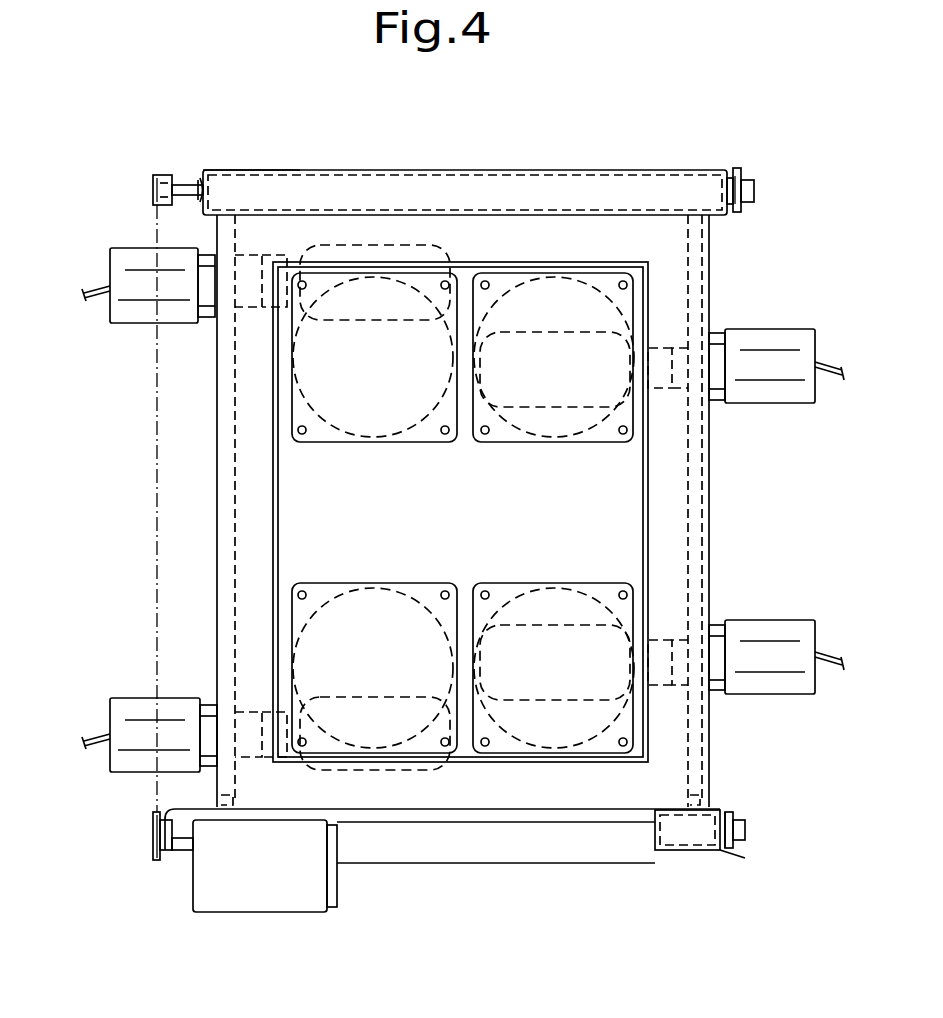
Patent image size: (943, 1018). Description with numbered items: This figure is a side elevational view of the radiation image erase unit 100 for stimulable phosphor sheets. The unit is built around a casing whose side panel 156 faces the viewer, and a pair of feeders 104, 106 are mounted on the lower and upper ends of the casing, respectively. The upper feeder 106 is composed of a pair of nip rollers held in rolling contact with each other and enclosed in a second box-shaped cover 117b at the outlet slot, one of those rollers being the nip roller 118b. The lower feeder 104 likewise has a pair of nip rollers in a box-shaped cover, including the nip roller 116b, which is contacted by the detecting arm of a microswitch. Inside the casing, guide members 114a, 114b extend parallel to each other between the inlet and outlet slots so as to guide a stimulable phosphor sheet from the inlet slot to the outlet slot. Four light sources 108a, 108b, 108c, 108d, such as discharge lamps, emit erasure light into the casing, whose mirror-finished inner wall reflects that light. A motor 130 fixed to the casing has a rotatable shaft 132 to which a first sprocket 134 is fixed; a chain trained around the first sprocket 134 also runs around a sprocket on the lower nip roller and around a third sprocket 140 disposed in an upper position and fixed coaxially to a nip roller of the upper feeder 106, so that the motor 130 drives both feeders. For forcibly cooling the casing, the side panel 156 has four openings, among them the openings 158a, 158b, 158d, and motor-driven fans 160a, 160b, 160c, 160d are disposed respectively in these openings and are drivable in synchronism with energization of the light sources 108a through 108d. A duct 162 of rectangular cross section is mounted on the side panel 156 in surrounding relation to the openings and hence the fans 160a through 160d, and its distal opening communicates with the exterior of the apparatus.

The radiation image erase unit 100 is at (723, 500).
The feeder 104 is at (717, 857).
The feeder 106 is at (482, 167).
The light source 108a is at (438, 246).
The light source 108b is at (575, 345).
The light source 108c is at (585, 675).
The light source 108d is at (442, 745).
The guide member 114a is at (232, 438).
The guide member 114b is at (690, 452).
The nip roller 116b is at (682, 836).
The second box-shaped cover 117b is at (278, 168).
The nip roller 118b is at (372, 195).
The motor 130 is at (247, 890).
The rotatable shaft 132 is at (177, 857).
The first sprocket 134 is at (152, 860).
The third sprocket 140 is at (155, 176).
The side panel 156 is at (662, 272).
The opening 158a is at (374, 391).
The opening 158b is at (553, 513).
The opening 158d is at (374, 633).
The motor-driven fan 160a is at (370, 474).
The motor-driven fan 160b is at (560, 443).
The motor-driven fan 160c is at (570, 583).
The motor-driven fan 160d is at (377, 545).
The duct 162 is at (663, 549).